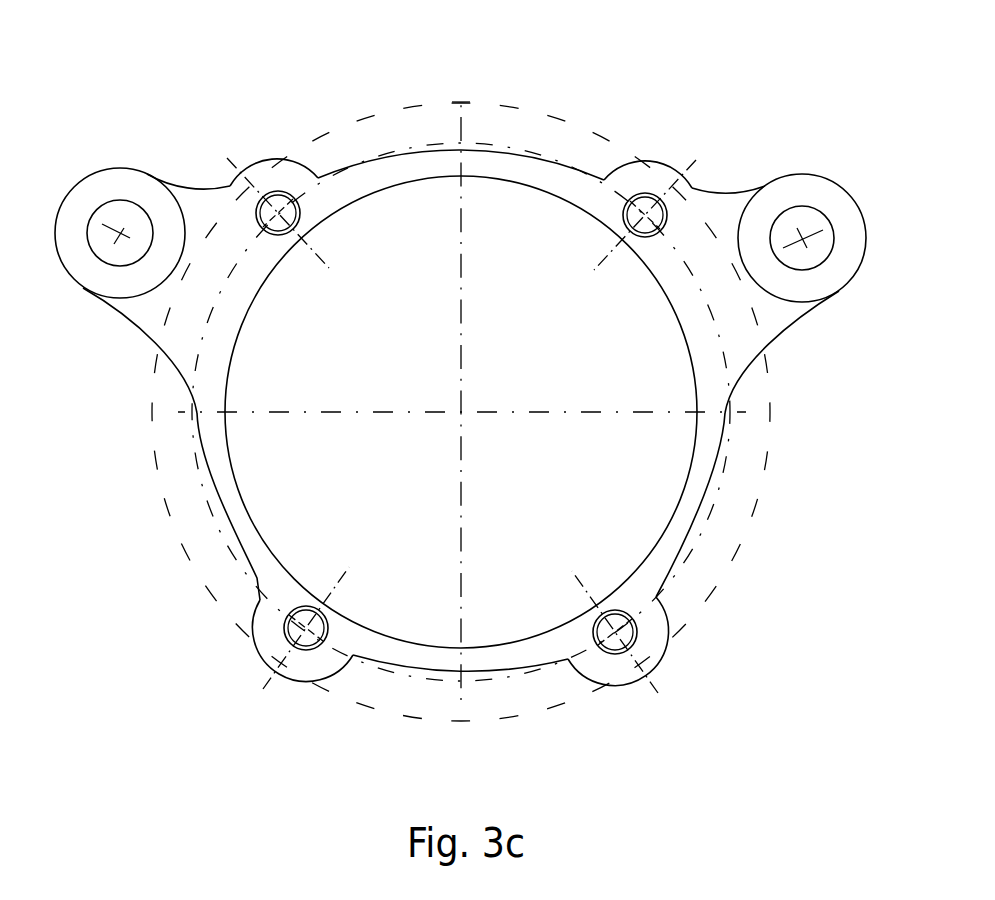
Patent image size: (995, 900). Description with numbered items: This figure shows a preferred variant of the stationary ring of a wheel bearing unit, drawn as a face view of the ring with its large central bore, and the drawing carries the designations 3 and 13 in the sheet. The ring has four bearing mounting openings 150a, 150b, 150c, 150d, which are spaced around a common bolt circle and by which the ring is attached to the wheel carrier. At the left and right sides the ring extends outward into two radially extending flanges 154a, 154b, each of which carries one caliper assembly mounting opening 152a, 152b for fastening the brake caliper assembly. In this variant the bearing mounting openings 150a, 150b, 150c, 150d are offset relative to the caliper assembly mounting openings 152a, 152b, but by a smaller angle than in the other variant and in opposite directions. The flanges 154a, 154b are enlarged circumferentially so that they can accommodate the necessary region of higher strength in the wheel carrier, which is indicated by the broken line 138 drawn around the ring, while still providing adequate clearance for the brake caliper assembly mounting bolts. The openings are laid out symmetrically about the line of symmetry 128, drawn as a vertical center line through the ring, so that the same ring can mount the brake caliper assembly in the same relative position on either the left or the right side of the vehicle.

The mounting plate / flange 3 is at (693, 487).
The mounting lug 13 is at (152, 198).
The line of symmetry 128 is at (459, 110).
The broken line 138 is at (767, 452).
The bearing mounting opening 150a is at (273, 195).
The bearing mounting opening 150b is at (637, 198).
The bearing mounting opening 150c is at (622, 655).
The bearing mounting opening 150d is at (308, 636).
The caliper assembly mounting opening 152a is at (121, 232).
The caliper assembly mounting opening 152b is at (803, 228).
The radially extending flange 154a is at (157, 305).
The radially extending flange 154b is at (778, 317).